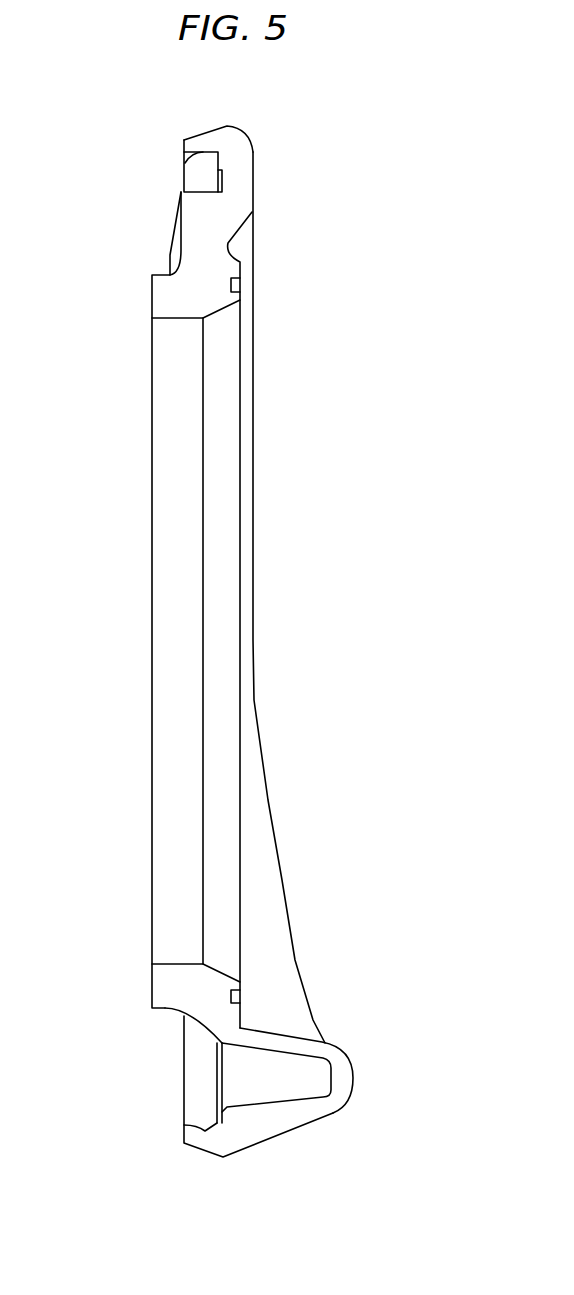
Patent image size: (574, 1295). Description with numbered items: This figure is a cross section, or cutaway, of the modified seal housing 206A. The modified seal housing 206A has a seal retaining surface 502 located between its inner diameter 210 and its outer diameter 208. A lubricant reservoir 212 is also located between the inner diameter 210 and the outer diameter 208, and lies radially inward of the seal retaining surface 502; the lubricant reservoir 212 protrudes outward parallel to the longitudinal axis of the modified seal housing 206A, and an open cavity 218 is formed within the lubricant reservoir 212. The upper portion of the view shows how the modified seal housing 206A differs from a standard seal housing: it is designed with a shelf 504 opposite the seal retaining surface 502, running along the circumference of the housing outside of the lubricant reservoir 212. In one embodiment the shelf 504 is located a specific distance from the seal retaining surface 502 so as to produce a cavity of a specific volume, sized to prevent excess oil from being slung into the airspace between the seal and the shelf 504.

The modified seal housing 206A is at (318, 286).
The outer diameter 208 is at (241, 134).
The inner diameter 210 is at (172, 628).
The lubricant reservoir 212 is at (353, 1082).
The open cavity 218 is at (212, 1062).
The seal retaining surface 502 is at (190, 162).
The shelf 504 is at (220, 178).